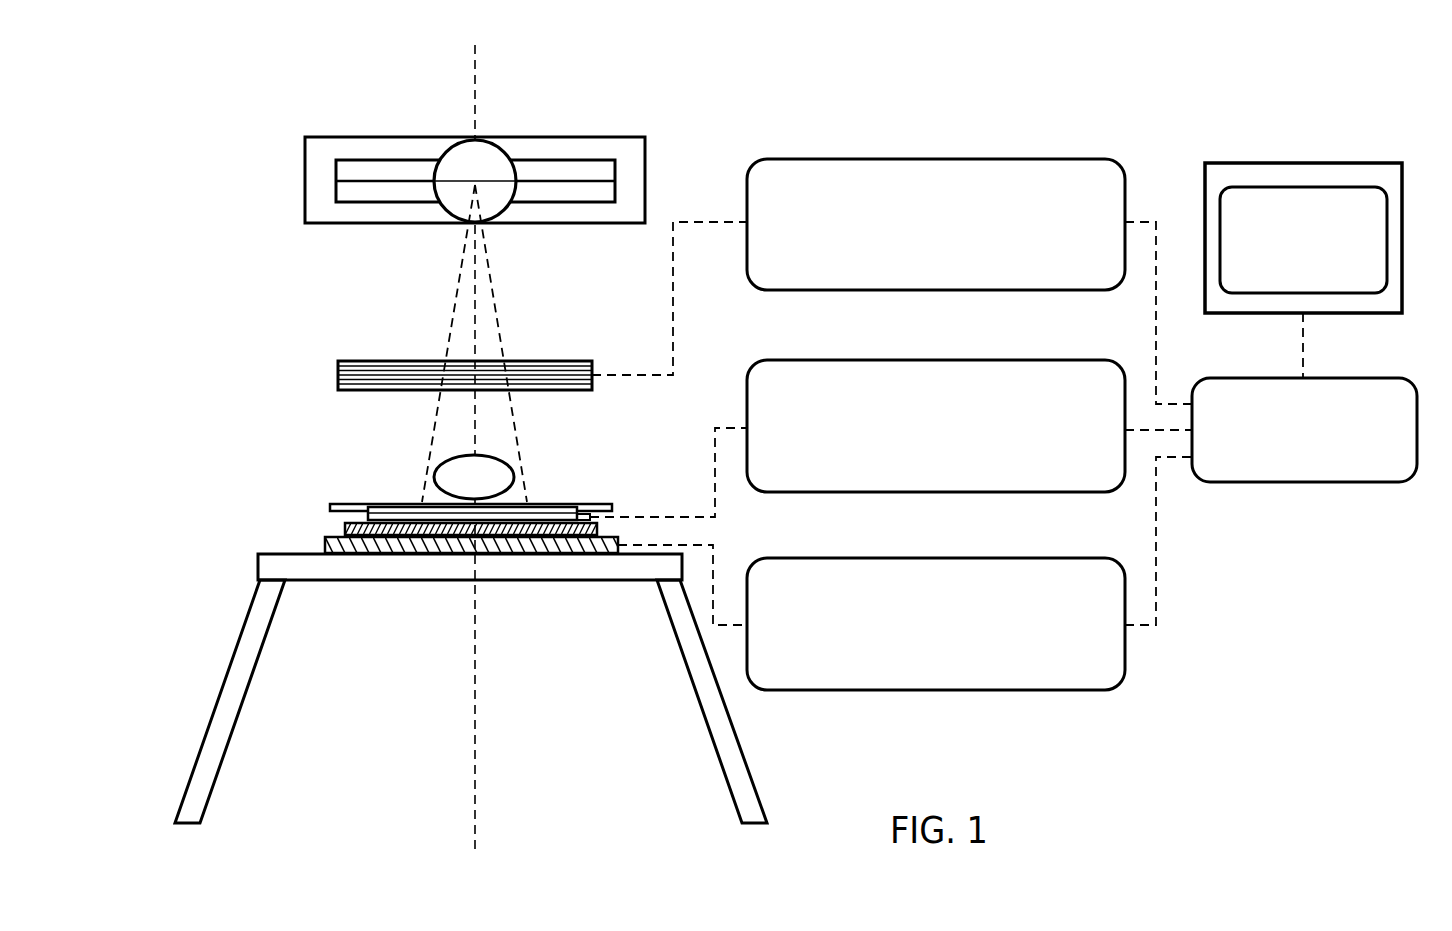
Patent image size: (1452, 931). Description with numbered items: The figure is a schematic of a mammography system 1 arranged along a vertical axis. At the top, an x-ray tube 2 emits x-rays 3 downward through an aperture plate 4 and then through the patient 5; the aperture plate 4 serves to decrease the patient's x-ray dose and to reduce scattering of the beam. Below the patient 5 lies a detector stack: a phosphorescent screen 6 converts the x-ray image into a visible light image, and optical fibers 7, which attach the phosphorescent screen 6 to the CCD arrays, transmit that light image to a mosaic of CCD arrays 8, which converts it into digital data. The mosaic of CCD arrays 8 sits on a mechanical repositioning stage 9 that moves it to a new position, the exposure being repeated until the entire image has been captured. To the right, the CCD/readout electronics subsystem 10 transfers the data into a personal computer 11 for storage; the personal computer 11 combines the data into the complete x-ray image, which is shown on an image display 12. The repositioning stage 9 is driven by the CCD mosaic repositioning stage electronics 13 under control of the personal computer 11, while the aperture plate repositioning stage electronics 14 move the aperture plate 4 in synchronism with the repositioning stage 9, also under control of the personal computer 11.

The mammography system 1 is at (813, 429).
The x-ray tube 2 is at (414, 183).
The x-rays 3 is at (417, 343).
The aperture plate 4 is at (419, 360).
The patient 5 is at (425, 451).
The phosphorescent screen 6 is at (425, 459).
The optical fibers 7 is at (386, 517).
The mosaic of CCD arrays 8 is at (388, 548).
The mechanical repositioning stage 9 is at (399, 590).
The CCD/readout electronics subsystem 10 is at (936, 399).
The personal computer 11 is at (1321, 403).
The image display 12 is at (1303, 211).
The CCD mosaic repositioning stage electronics 13 is at (936, 597).
The aperture plate repositioning stage electronics 14 is at (944, 182).